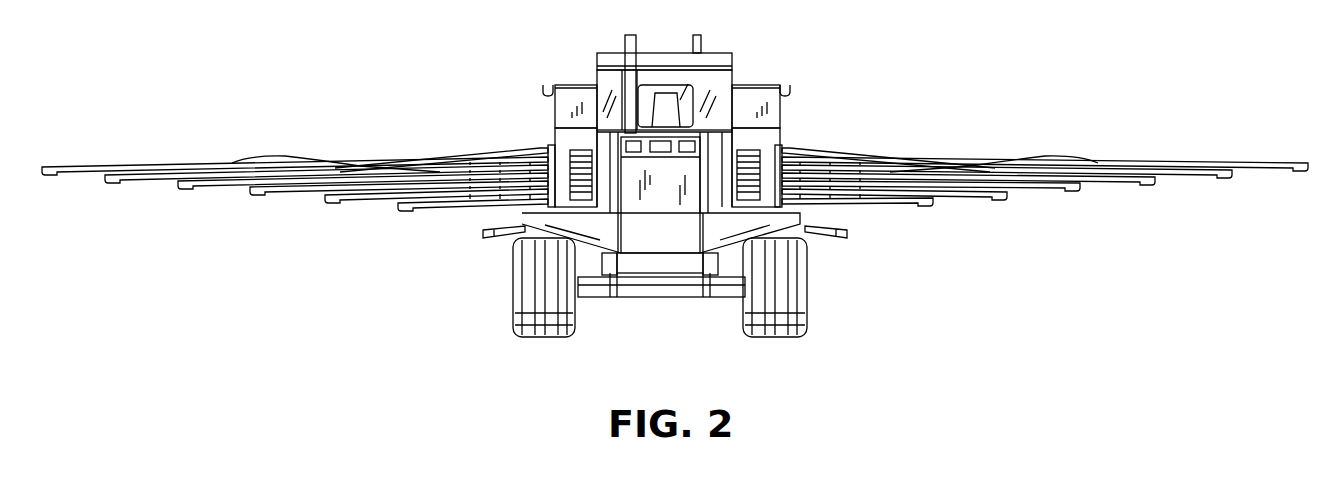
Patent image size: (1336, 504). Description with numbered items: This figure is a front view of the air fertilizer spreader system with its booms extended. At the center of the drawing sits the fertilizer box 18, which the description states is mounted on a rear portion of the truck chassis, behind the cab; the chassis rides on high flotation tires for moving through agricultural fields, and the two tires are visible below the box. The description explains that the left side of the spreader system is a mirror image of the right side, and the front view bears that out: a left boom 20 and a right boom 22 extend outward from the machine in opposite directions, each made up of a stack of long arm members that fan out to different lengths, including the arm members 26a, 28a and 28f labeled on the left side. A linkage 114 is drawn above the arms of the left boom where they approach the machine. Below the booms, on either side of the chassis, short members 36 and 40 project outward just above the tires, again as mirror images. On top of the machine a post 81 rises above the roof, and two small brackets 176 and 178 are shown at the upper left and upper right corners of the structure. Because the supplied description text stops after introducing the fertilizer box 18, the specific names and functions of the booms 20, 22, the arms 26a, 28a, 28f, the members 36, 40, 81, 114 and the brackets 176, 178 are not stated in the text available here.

The fertilizer box 18 is at (748, 82).
The left boom assembly 20 is at (293, 145).
The right boom assembly 22 is at (1050, 140).
The boom arm section 26a is at (90, 168).
The boom arm segment 28a is at (50, 175).
The boom arm segment 28f is at (395, 209).
The left support arm 36 is at (480, 238).
The right support arm 40 is at (850, 238).
The exhaust / antenna post 81 is at (700, 38).
The boom fold linkage brace 114 is at (447, 152).
The left mirror bracket 176 is at (543, 85).
The right mirror bracket 178 is at (790, 87).